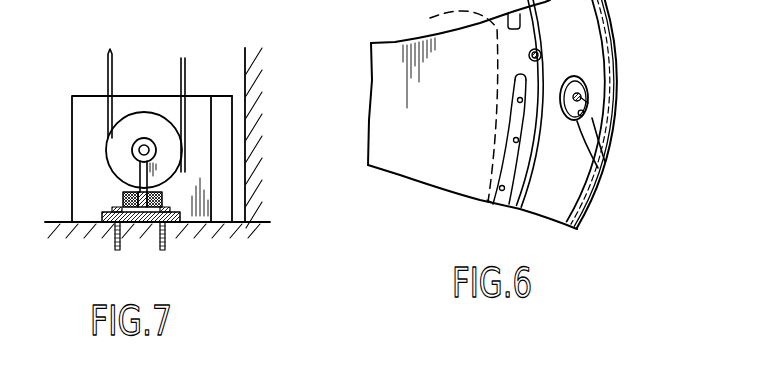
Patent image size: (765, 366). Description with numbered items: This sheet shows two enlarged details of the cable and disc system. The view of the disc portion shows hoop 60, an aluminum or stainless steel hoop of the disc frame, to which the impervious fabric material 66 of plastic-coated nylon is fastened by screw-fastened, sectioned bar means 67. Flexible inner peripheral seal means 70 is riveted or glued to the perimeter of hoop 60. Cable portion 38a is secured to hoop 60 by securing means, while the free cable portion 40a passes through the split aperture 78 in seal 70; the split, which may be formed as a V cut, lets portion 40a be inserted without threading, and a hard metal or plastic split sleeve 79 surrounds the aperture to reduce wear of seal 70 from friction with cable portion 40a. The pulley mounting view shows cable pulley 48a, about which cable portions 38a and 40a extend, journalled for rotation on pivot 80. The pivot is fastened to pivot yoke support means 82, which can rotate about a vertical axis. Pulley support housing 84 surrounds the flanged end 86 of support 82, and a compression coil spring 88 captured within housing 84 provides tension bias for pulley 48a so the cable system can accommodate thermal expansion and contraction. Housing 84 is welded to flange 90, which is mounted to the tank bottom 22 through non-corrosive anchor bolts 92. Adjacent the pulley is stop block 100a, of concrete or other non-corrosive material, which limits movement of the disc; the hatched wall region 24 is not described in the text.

In FIG. 7, the tank bottom 22 is at (262, 279).
In FIG. 7, the wall 24 is at (292, 159).
In FIG. 7, the cable portion 38a is at (183, 62).
In FIG. 6, the cable portion 38a is at (542, 55).
In FIG. 7, the free cable portion 40a is at (107, 62).
In FIG. 6, the free cable portion 40a is at (588, 103).
In FIG. 7, the cable pulley 48a is at (148, 112).
In FIG. 6, the hoop 60 is at (445, 104).
In FIG. 6, the impervious fabric material 66 is at (392, 60).
In FIG. 6, the sectioned bar means 67 is at (489, 205).
In FIG. 6, the inner peripheral seal means 70 is at (600, 62).
In FIG. 6, the split aperture 78 is at (600, 168).
In FIG. 6, the split sleeve 79 is at (588, 83).
In FIG. 7, the pivot 80 is at (132, 154).
In FIG. 7, the pivot yoke support means 82 is at (138, 172).
In FIG. 7, the pulley support housing 84 is at (135, 234).
In FIG. 7, the flanged end 86 is at (152, 236).
In FIG. 7, the compression coil spring 88 is at (123, 197).
In FIG. 7, the flange 90 is at (162, 200).
In FIG. 7, the anchor bolts 92 is at (117, 246).
In FIG. 7, the stop block 100a is at (221, 108).